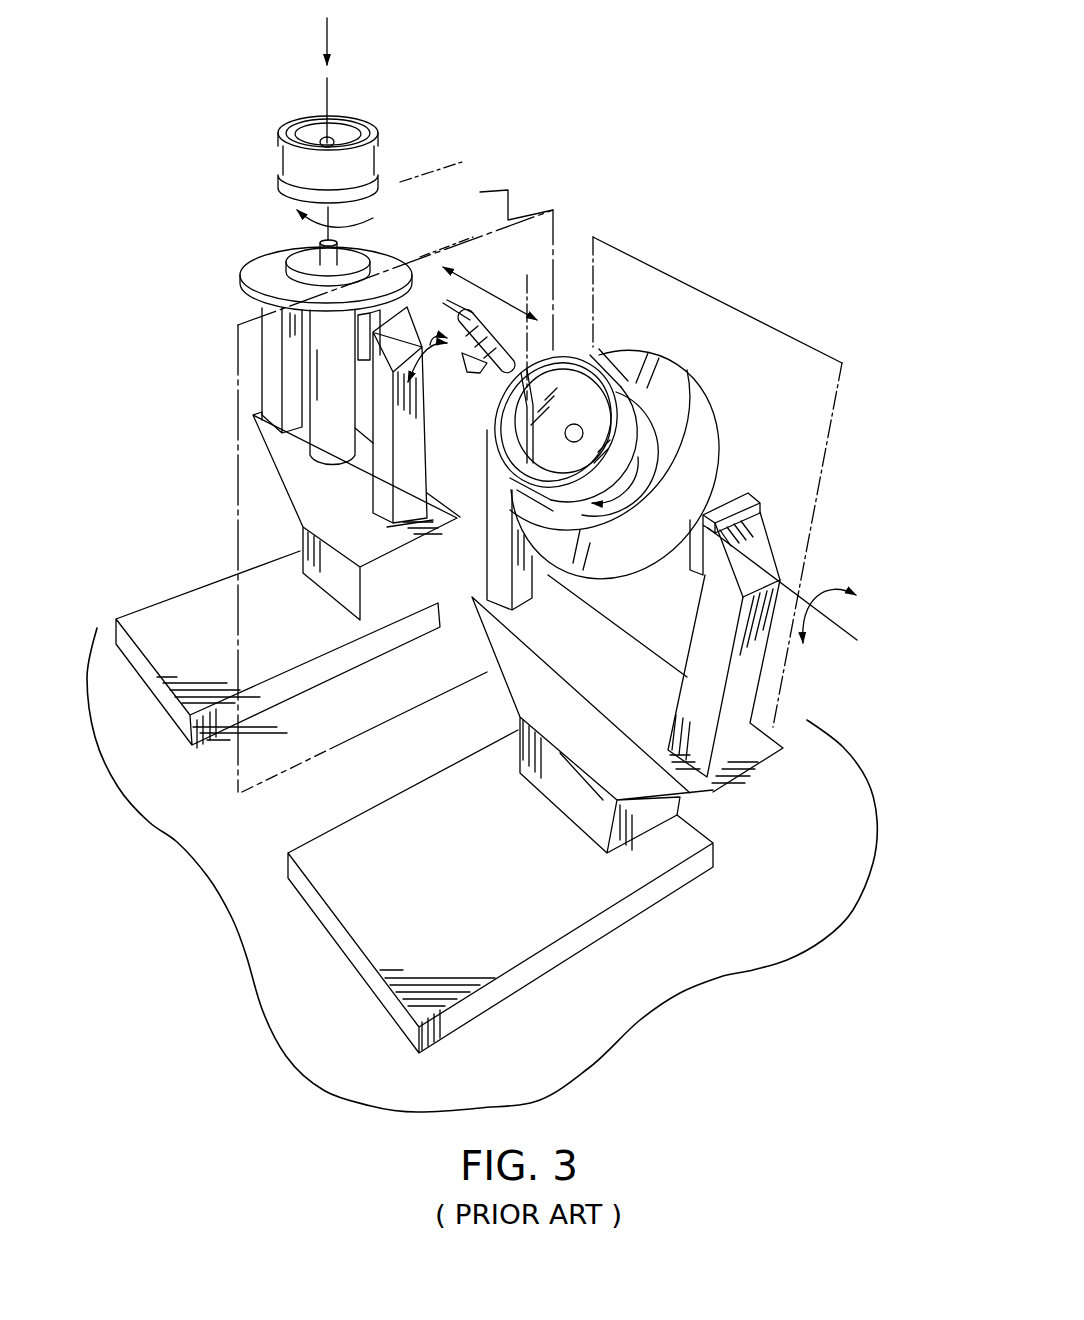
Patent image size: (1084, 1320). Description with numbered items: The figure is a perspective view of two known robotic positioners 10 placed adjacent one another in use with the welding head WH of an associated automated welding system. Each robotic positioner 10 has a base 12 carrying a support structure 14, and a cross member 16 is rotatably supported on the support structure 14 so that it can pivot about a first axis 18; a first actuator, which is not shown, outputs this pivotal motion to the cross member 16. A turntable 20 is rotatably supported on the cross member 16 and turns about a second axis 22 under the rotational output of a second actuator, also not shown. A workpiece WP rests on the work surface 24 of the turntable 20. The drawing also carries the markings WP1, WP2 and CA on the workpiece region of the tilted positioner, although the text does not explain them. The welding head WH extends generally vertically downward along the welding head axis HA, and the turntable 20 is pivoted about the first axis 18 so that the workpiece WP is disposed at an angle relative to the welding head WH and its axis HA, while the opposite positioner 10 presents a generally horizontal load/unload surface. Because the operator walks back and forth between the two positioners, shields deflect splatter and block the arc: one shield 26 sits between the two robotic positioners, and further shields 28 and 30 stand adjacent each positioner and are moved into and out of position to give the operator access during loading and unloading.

The robotic positioner 10 is at (222, 332).
The base 12 is at (182, 593).
The support structure 14 is at (262, 380).
The cross member 16 is at (355, 333).
The first axis 18 is at (390, 333).
The turntable 20 is at (381, 240).
The second axis 22 is at (332, 80).
The work surface 24 is at (273, 267).
The shield 26 is at (475, 237).
The shield 28 is at (780, 328).
The shield 30 is at (405, 128).
The workpiece WP is at (285, 110).
The workpiece portion WP1 is at (589, 528).
The workpiece portion WP2 is at (600, 419).
The welding head axis HA is at (528, 278).
The center axis CA is at (604, 419).
The welding head WH is at (478, 387).